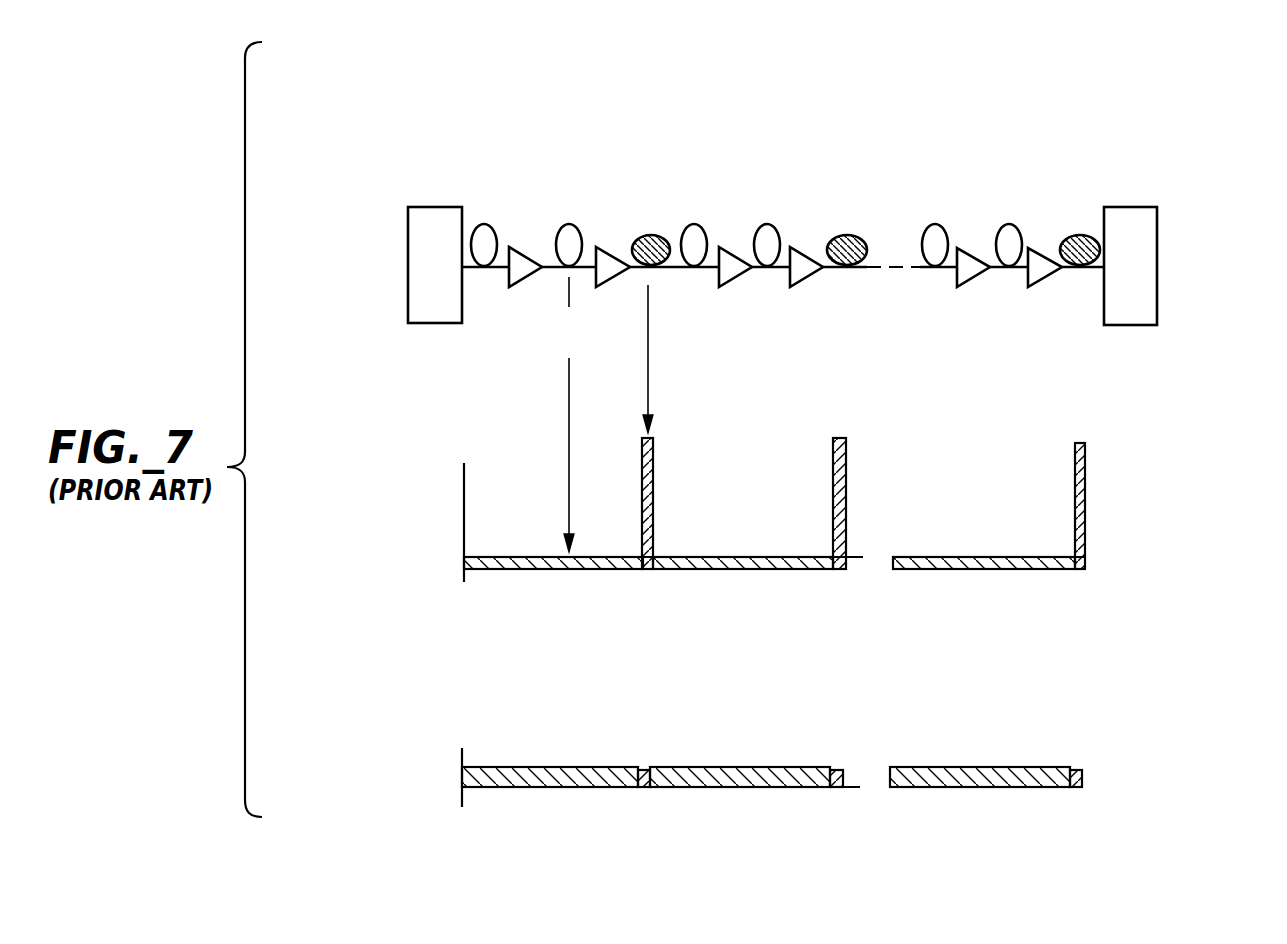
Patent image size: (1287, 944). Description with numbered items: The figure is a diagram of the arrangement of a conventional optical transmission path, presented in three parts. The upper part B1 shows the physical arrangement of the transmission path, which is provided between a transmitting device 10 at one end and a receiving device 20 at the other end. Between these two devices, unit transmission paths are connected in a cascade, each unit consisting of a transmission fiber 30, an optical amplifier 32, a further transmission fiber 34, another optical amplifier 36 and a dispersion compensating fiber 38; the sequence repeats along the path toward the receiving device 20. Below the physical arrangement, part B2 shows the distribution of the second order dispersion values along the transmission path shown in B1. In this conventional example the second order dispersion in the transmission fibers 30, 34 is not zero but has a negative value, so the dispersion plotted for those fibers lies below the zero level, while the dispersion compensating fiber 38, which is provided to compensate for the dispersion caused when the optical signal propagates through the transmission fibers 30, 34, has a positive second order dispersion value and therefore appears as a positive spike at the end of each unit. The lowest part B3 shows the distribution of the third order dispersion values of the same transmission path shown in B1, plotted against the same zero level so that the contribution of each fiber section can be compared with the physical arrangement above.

The transmitting device 10 is at (407, 207).
The receiving device 20 is at (1128, 207).
The transmission fiber 30 is at (481, 225).
The optical amplifier 32 is at (511, 285).
The transmission fiber 34 is at (557, 226).
The optical amplifier 36 is at (602, 252).
The dispersion compensating fiber 38 is at (847, 234).
The physical arrangement of the transmission path B1 is at (403, 275).
The distribution of second order dispersion values B2 is at (423, 509).
The distribution of third order dispersion values B3 is at (416, 774).